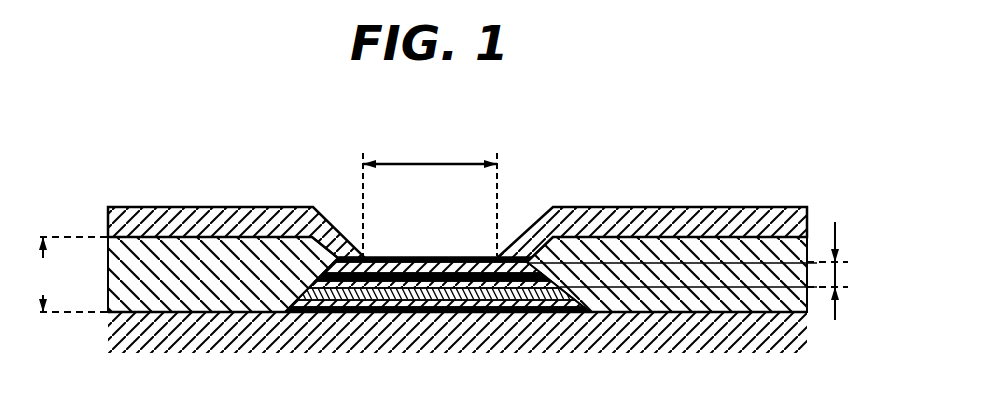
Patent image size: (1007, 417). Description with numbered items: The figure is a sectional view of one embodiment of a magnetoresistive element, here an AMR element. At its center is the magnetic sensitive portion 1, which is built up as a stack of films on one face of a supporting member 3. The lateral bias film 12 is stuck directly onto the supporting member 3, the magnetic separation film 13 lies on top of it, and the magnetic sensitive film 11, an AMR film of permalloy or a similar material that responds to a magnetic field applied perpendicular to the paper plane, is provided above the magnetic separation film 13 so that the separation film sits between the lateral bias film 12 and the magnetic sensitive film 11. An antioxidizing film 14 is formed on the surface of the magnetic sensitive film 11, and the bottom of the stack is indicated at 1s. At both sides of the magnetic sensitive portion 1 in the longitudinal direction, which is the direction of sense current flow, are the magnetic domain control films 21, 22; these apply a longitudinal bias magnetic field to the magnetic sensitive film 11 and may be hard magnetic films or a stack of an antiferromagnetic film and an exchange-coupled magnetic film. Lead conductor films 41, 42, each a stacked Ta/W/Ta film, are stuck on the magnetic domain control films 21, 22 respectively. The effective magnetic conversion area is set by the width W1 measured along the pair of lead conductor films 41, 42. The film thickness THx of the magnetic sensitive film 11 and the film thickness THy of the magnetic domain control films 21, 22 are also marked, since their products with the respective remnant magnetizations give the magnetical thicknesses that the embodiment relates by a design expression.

The magnetic sensitive portion 1 is at (426, 243).
The magnetic sensitive film 11 is at (388, 257).
The lateral bias film 12 is at (335, 310).
The magnetic separation film 13 is at (408, 310).
The antioxidizing film 14 is at (462, 257).
The bottom surface layer of the element 1s is at (467, 310).
The supporting member 3 is at (570, 335).
The magnetic domain control film 21 is at (172, 292).
The magnetic domain control film 22 is at (723, 300).
The lead conductor film 41 is at (200, 209).
The lead conductor film 42 is at (698, 208).
The width W1 is at (430, 197).
The film thickness of the magnetic sensitive film THx is at (852, 271).
The film thickness of the magnetic domain control films THy is at (66, 274).